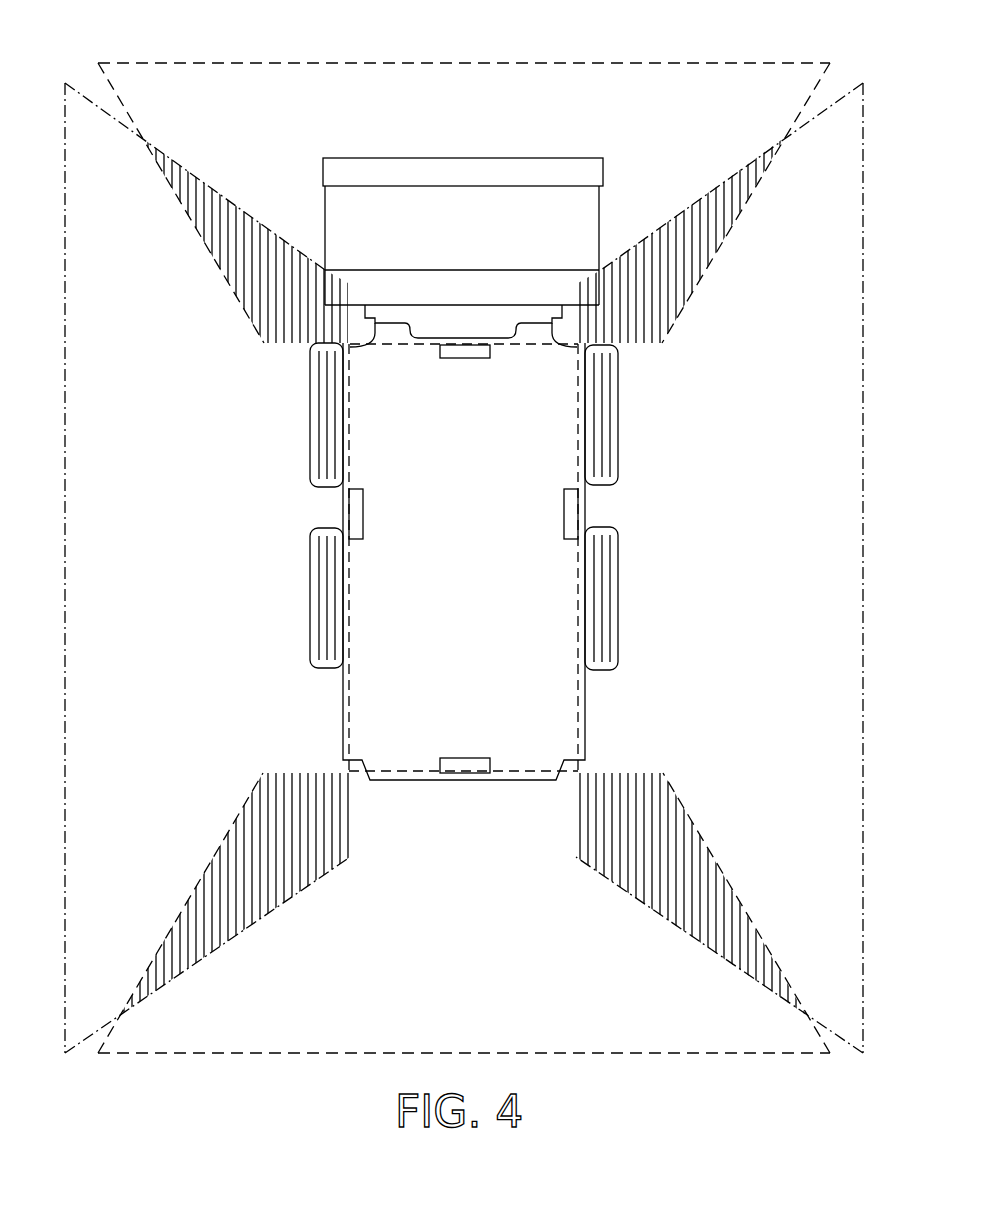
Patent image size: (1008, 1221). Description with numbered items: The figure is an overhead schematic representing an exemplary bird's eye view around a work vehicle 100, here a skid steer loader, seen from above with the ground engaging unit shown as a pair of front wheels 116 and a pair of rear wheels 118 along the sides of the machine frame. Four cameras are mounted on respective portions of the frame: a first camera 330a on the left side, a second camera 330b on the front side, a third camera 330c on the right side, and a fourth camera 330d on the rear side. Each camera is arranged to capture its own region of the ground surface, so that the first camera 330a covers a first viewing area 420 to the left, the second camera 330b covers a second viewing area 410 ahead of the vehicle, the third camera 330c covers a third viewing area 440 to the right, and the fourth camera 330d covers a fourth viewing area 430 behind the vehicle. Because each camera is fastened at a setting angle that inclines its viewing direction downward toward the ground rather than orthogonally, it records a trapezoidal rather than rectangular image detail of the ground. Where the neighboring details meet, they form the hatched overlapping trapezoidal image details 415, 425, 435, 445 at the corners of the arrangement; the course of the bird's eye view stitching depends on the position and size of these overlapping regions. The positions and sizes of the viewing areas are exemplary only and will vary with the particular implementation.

The work vehicle 100 is at (727, 707).
The front wheels 116 is at (310, 408).
The rear wheels 118 is at (310, 590).
The first camera 330a is at (355, 539).
The second camera 330b is at (448, 358).
The third camera 330c is at (570, 539).
The fourth camera 330d is at (465, 758).
The second viewing area 410 is at (322, 97).
The overlapping trapezoidal image detail 415 is at (217, 232).
The first viewing area 420 is at (105, 518).
The overlapping trapezoidal image detail 425 is at (217, 873).
The fourth viewing area 430 is at (306, 992).
The overlapping trapezoidal image detail 435 is at (695, 848).
The third viewing area 440 is at (810, 490).
The overlapping trapezoidal image detail 445 is at (690, 262).